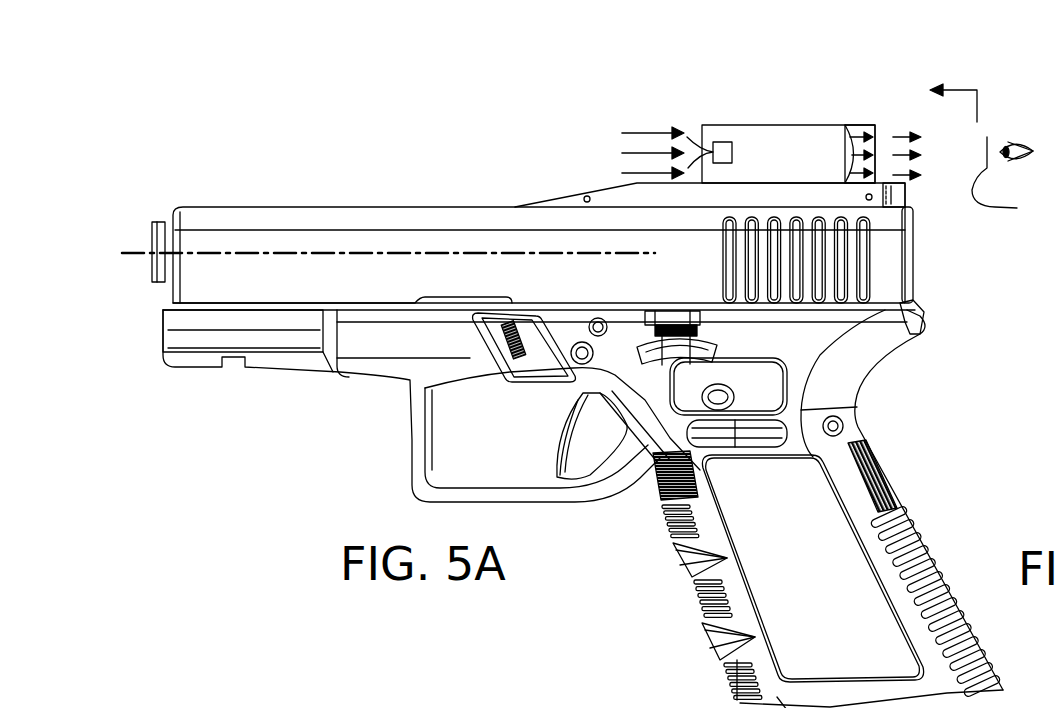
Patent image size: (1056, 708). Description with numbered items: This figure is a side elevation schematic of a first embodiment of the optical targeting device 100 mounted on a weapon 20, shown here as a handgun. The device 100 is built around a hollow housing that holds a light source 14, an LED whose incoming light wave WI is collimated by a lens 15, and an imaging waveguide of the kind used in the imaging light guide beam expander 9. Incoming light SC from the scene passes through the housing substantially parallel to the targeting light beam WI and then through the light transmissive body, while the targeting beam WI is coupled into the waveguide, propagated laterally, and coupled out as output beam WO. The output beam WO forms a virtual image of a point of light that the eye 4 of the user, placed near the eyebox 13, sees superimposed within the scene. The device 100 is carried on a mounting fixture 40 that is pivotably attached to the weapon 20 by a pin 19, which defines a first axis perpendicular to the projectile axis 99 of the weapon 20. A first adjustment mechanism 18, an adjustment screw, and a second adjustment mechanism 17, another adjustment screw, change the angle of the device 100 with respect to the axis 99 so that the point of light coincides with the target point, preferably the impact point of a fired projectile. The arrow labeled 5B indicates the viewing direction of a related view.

The optical targeting device 100 is at (790, 98).
The light source 14 is at (722, 150).
The lens 15 is at (849, 160).
The imaging light guide beam expander 9 is at (868, 155).
The targeting light beam WI is at (862, 178).
The output beam WO is at (907, 157).
The incoming light from the scene SC is at (632, 153).
The first adjustment mechanism 18 is at (893, 193).
The second adjustment mechanism 17 is at (872, 200).
The pin 19 is at (585, 196).
The mounting fixture 40 is at (697, 210).
The axis of the handheld weapon 99 is at (372, 252).
The view direction of FIG. 5B is at (953, 91).
The eye 4 is at (1012, 150).
The eyebox 13 is at (1007, 178).
The weapon 20 is at (778, 583).